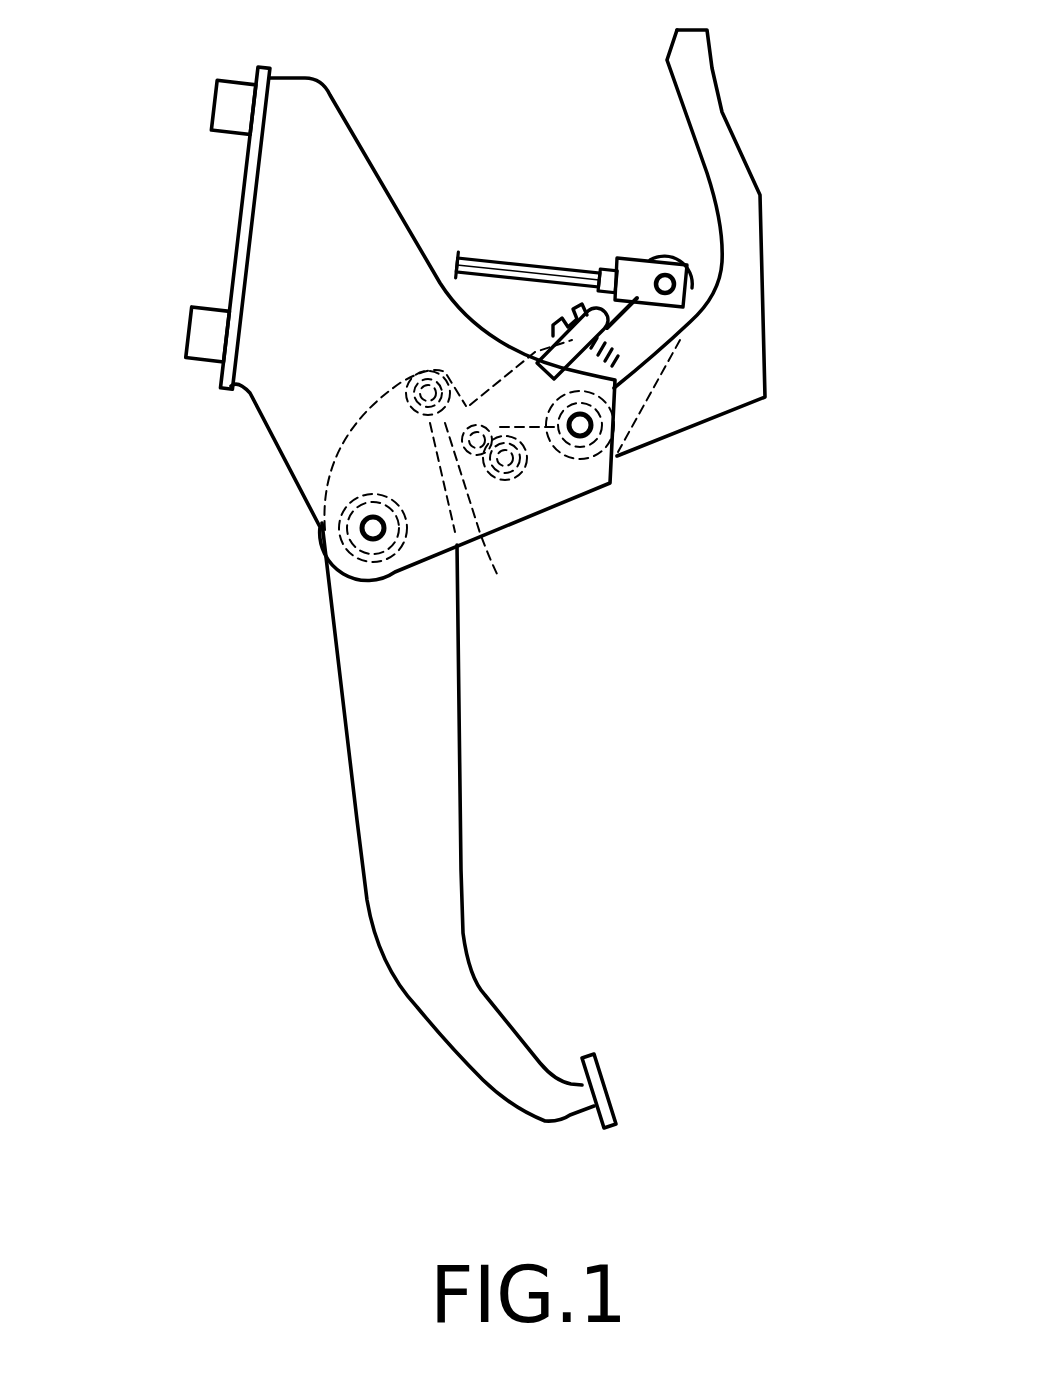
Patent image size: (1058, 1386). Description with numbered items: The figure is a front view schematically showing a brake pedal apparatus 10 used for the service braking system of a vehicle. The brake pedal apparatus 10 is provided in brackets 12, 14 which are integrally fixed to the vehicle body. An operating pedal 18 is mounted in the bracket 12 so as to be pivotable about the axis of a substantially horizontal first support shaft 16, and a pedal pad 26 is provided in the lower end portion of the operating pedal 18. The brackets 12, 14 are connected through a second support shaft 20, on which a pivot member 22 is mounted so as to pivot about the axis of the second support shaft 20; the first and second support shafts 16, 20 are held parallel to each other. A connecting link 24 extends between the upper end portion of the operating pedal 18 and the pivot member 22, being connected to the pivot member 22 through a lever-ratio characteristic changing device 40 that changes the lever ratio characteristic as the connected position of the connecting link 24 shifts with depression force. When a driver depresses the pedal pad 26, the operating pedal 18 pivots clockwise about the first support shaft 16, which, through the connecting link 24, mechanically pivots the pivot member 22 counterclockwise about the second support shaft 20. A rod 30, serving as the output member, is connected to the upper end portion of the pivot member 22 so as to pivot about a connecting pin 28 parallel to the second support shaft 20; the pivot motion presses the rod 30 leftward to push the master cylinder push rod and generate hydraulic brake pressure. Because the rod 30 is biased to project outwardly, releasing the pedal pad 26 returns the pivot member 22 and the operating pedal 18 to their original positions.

The brake pedal apparatus 10 is at (477, 579).
The bracket 12 is at (328, 132).
The bracket 14 is at (742, 212).
The first support shaft 16 is at (375, 545).
The operating pedal 18 is at (442, 811).
The second support shaft 20 is at (580, 425).
The pivot member 22 is at (655, 330).
The connecting link 24 is at (502, 481).
The pedal pad 26 is at (603, 1093).
The connecting pin 28 is at (663, 260).
The rod 30 is at (555, 268).
The lever-ratio characteristic changing device 40 is at (522, 320).